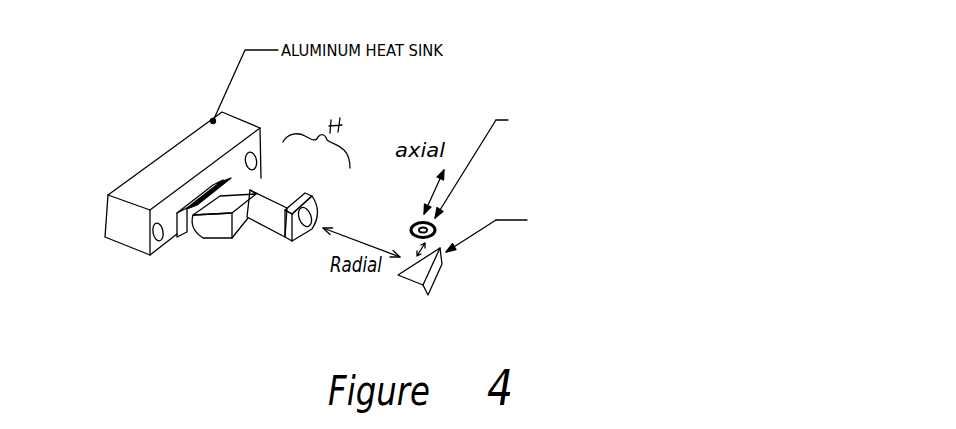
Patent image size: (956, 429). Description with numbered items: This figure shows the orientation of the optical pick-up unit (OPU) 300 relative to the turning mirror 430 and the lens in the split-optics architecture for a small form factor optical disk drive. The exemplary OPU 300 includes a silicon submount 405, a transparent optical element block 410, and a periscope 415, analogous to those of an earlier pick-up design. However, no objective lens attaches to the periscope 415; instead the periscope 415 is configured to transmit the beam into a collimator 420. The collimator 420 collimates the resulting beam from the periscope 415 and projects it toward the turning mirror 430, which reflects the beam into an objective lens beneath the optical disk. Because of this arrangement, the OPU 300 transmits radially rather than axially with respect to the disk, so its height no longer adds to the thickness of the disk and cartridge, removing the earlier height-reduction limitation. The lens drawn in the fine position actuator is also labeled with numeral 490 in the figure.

The optical pick-up unit (OPU) 300 is at (284, 254).
The silicon submount 405 is at (177, 238).
The transparent optical element block 410 is at (237, 189).
The periscope 415 is at (244, 238).
The collimator 420 is at (318, 204).
The turning mirror 430 is at (424, 287).
The lens in fine position actuator 490 is at (559, 158).